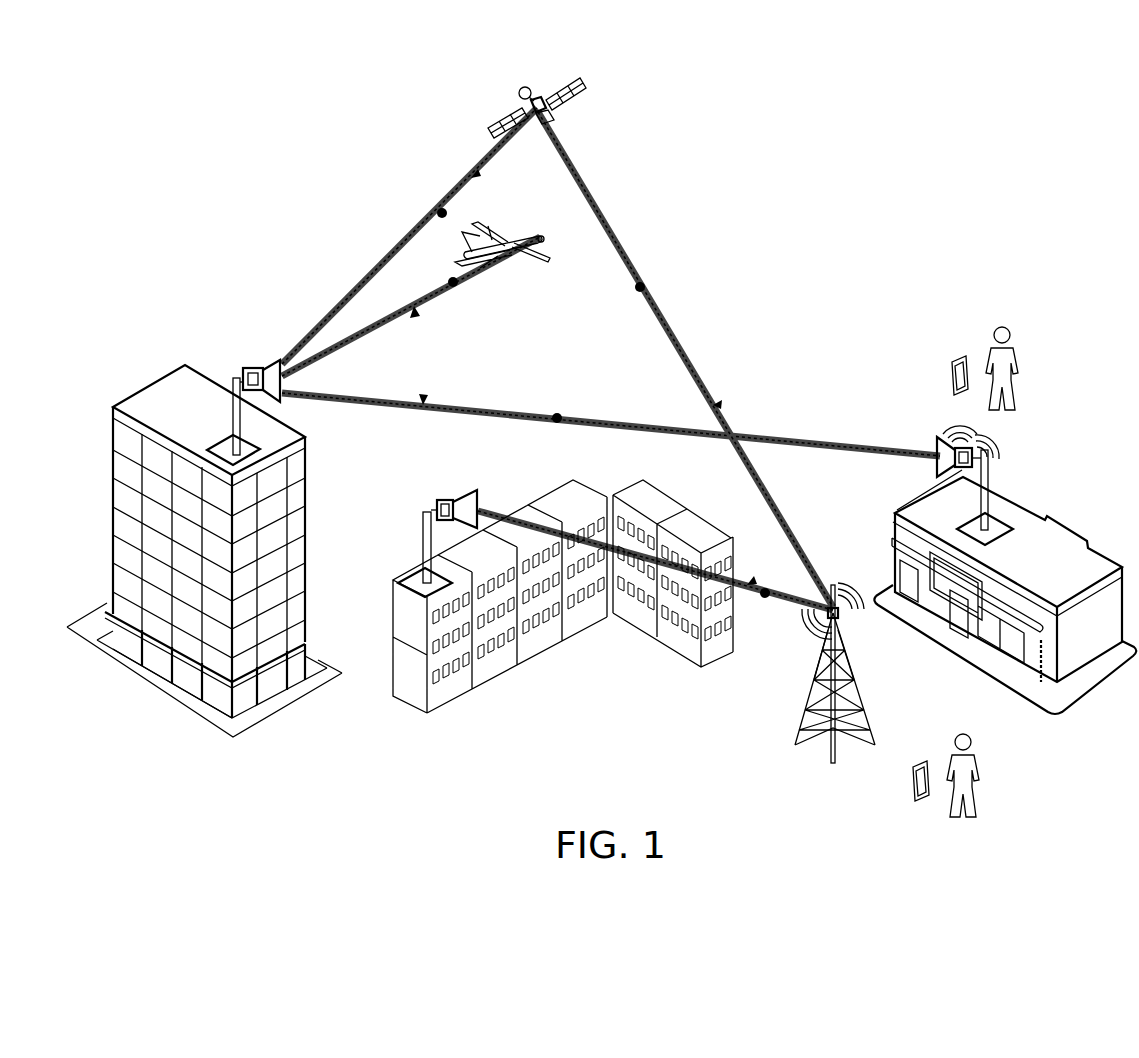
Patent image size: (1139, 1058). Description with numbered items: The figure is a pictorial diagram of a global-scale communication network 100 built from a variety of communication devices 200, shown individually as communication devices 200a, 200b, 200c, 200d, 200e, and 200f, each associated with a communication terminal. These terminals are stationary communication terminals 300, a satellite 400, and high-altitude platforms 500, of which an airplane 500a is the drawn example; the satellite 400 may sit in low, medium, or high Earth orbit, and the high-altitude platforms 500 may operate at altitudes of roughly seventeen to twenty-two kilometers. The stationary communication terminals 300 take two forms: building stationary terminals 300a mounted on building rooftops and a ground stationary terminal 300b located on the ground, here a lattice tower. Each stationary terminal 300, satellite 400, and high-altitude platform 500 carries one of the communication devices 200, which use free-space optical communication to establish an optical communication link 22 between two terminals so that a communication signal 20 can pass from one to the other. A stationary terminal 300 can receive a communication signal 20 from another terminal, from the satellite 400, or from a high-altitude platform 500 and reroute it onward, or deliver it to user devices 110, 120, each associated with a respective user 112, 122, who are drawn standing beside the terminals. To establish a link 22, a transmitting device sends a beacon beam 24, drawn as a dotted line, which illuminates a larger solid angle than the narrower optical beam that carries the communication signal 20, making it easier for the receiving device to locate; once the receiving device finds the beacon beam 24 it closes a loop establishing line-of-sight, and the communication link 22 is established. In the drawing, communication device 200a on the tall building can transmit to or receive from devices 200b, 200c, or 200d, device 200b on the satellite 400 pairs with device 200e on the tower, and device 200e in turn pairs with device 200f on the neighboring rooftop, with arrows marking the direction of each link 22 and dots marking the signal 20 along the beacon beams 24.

The communication network 100 is at (288, 143).
The communication signal 20 is at (438, 213).
The optical communication link 22 is at (474, 170).
The beacon beam 24 is at (370, 279).
The user device 110 is at (912, 783).
The user 112 is at (982, 760).
The user device 120 is at (950, 375).
The user 122 is at (1018, 353).
The communication device 200 is at (683, 347).
The communication device 200a is at (252, 366).
The communication device 200b is at (541, 99).
The communication device 200c is at (544, 241).
The communication device 200d is at (1000, 453).
The communication device 200e is at (818, 630).
The communication device 200f is at (446, 500).
The stationary communication terminal 300 is at (601, 546).
The building stationary terminal 300a is at (1020, 482).
The ground stationary terminal 300b is at (797, 740).
The satellite 400 is at (518, 102).
The high-altitude platform 500 is at (506, 220).
The airplane 500a is at (506, 220).